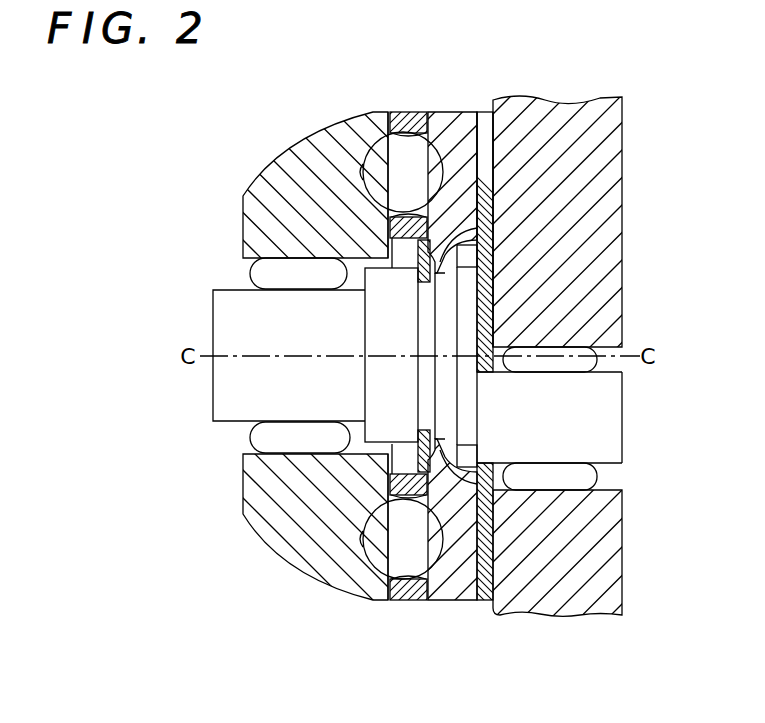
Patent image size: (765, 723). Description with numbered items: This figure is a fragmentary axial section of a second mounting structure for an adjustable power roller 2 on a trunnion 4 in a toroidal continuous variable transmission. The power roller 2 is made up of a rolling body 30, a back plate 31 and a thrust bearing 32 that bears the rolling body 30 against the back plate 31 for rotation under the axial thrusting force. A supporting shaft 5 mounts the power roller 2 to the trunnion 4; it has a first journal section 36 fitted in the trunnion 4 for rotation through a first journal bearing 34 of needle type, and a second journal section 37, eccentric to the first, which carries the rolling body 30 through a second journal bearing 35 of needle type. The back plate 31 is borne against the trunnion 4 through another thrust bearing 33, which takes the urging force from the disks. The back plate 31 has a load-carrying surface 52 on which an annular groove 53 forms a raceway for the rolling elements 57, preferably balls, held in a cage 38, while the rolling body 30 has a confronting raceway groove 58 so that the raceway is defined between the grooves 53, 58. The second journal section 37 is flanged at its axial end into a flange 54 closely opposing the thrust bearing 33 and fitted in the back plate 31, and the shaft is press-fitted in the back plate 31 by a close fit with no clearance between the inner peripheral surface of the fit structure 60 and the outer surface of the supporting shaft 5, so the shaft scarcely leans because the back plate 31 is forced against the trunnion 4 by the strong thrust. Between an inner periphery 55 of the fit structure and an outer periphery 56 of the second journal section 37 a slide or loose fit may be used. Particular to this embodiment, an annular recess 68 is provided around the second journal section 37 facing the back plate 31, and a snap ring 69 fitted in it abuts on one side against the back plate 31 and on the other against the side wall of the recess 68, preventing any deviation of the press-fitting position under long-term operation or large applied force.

The power roller 2 is at (256, 184).
The trunnion 4 is at (582, 130).
The supporting shaft 5 is at (626, 398).
The rolling body 30 is at (300, 496).
The back plate 31 is at (475, 597).
The thrust bearing 32 is at (385, 168).
The thrust bearing 33 is at (483, 170).
The first journal bearing 34 is at (590, 362).
The second journal bearing 35 is at (270, 273).
The first journal section 36 is at (600, 425).
The second journal section 37 is at (385, 338).
The cage 38 is at (404, 122).
The load-carrying surface 52 is at (416, 128).
The annular groove 53 is at (437, 140).
The flange 54 is at (465, 327).
The inner periphery 55 is at (462, 267).
The outer periphery 56 is at (446, 247).
The rolling elements 57 is at (377, 130).
The raceway groove 58 is at (352, 137).
The fit structure 60 is at (490, 212).
The annular recess 68 is at (438, 273).
The snap ring 69 is at (452, 235).